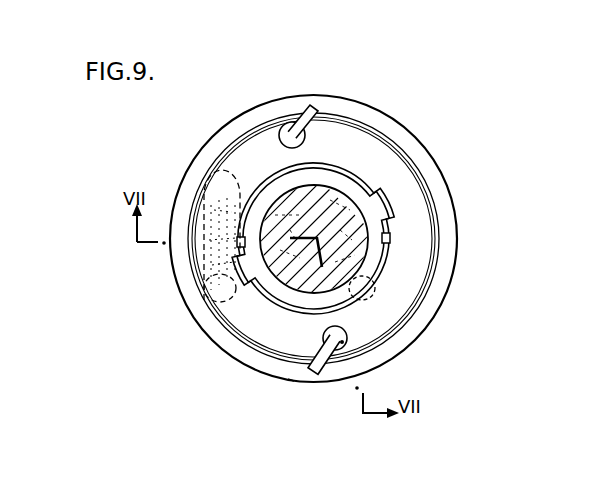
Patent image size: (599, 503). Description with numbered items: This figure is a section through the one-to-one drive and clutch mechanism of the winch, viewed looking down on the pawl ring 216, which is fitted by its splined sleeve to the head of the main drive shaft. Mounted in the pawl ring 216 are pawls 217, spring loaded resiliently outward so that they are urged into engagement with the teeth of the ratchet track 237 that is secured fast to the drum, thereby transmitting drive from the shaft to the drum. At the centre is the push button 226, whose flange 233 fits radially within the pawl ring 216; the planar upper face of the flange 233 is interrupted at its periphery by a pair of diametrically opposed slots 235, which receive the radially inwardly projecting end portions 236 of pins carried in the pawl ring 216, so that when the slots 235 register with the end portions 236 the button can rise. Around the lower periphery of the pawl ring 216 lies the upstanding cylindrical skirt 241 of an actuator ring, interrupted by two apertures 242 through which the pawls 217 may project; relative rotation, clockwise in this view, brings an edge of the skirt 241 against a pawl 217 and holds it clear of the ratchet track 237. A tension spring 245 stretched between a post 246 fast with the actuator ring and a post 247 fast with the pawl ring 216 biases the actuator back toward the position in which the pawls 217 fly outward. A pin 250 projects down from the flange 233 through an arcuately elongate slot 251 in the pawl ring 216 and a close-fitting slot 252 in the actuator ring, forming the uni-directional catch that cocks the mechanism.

The pawl ring 216 is at (367, 150).
The pawls 217 is at (342, 342).
The push button 226 is at (297, 280).
The flange 233 is at (300, 296).
The slots 235 is at (378, 192).
The end portions 236 is at (392, 238).
The ratchet track 237 is at (291, 380).
The skirt portion 241 is at (390, 310).
The apertures 242 is at (293, 122).
The tension spring 245 is at (205, 272).
The post 246 is at (195, 325).
The post 247 is at (200, 202).
The pin 250 is at (393, 258).
The arcuately elongate slot 251 is at (386, 282).
The close-fitting slot 252 is at (394, 270).